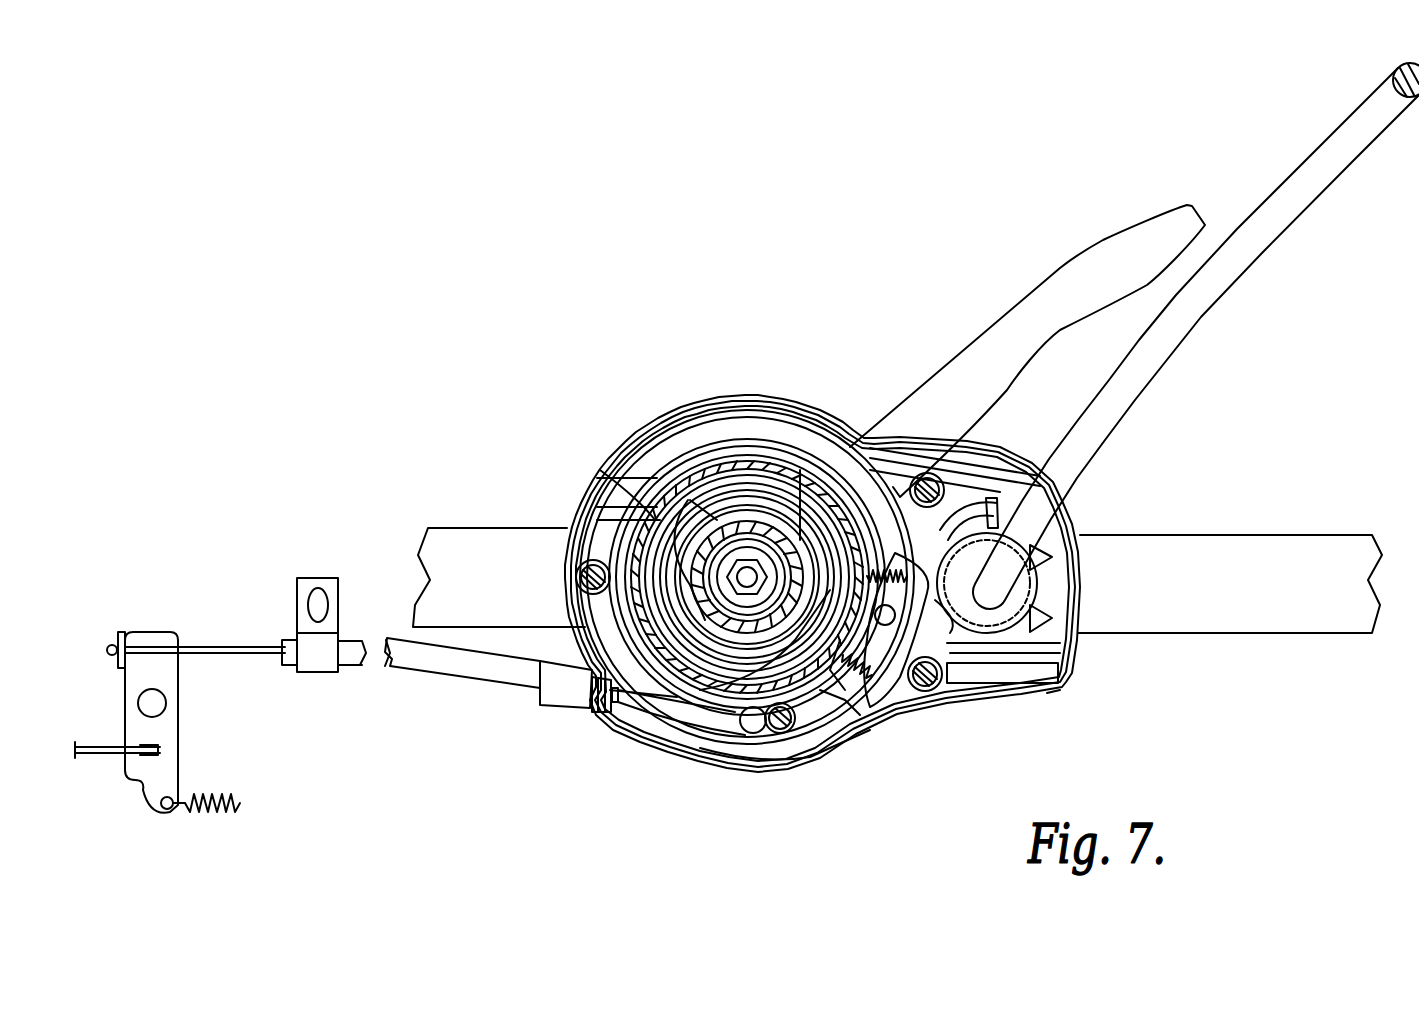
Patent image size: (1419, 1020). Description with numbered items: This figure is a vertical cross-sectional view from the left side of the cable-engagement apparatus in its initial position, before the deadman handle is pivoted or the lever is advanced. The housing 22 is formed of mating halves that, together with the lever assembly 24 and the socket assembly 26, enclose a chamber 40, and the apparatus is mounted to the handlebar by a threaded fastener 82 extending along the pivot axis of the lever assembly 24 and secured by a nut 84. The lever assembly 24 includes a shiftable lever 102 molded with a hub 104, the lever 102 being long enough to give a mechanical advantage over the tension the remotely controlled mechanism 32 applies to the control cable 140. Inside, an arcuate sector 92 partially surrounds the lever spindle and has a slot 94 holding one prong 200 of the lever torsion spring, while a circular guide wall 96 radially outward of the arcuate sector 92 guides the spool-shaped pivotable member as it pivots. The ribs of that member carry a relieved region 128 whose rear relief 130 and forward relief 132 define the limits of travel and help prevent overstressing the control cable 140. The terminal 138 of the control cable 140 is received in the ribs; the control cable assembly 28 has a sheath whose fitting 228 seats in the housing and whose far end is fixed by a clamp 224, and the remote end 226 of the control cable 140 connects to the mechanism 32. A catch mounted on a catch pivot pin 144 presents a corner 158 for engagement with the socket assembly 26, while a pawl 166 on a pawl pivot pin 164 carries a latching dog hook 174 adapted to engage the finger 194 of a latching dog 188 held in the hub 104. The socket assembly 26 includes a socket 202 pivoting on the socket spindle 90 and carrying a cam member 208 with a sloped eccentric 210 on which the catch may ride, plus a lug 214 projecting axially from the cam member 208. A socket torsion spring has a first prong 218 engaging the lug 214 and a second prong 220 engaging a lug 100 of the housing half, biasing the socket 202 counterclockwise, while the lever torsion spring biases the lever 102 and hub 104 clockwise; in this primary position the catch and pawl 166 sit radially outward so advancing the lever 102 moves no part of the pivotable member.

The housing 22 is at (718, 786).
The lever assembly 24 is at (907, 382).
The socket assembly 26 is at (1047, 697).
The control cable assembly 28 is at (453, 690).
The remotely controlled mechanism 32 is at (192, 709).
The chamber 40 is at (617, 437).
The threaded fastener 82 is at (737, 515).
The nut 84 is at (750, 567).
The socket spindle 90 is at (970, 637).
The arcuate sector 92 is at (717, 520).
The slot 94 is at (657, 460).
The circular guide wall 96 is at (640, 500).
The lug 100 is at (1083, 567).
The lever 102 is at (1010, 312).
The hub 104 is at (662, 680).
The relieved region 128 is at (650, 520).
The rear relief 130 is at (567, 560).
The forward relief 132 is at (653, 460).
The terminal 138 is at (780, 730).
The control cable 140 is at (612, 693).
The catch pivot pin 144 is at (930, 695).
The corner 158 is at (895, 690).
The pawl pivot pin 164 is at (845, 700).
The pawl 166 is at (733, 707).
The latching dog hook 174 is at (855, 690).
The latching dog 188 is at (835, 545).
The finger 194 is at (895, 475).
The prong 200 is at (797, 470).
The socket 202 is at (1020, 592).
The cam member 208 is at (980, 633).
The eccentric 210 is at (950, 633).
The lug 214 is at (960, 505).
The prong 218 is at (991, 498).
The prong 220 is at (1073, 530).
The clamp 224 is at (318, 675).
The remote end 226 is at (125, 650).
The fitting 228 is at (568, 692).